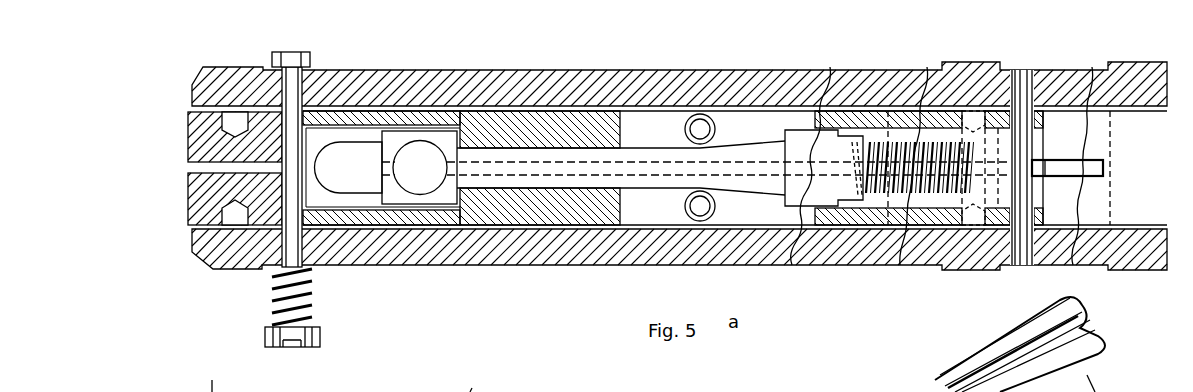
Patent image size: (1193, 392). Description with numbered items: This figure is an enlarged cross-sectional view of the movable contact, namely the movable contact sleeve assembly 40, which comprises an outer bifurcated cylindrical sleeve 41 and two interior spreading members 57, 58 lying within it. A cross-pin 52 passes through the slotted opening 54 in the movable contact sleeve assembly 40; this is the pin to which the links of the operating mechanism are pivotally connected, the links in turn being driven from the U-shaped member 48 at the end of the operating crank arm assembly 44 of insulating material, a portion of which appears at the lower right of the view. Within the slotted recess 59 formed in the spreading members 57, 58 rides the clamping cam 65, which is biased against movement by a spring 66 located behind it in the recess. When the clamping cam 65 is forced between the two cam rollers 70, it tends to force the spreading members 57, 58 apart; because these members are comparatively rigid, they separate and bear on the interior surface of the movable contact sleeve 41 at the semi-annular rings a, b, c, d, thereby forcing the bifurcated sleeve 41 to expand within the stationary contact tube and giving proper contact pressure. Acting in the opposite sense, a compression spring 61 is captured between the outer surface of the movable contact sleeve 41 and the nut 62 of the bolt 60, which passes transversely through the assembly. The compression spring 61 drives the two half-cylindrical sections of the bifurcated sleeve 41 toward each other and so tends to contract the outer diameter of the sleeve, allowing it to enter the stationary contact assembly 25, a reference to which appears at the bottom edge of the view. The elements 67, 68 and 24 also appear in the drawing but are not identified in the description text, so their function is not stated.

The movable contact sleeve assembly 40 is at (603, 267).
The outer bifurcated cylindrical sleeve 41 is at (590, 78).
The cross-pin 52 is at (427, 185).
The slotted opening 54 is at (347, 142).
The spreading member 57 is at (192, 213).
The spreading member 58 is at (192, 143).
The slotted recess 59 is at (613, 148).
The bolt 60 is at (292, 348).
The compression spring 61 is at (273, 300).
The nut 62 is at (322, 339).
The clamping cam 65 is at (771, 147).
The spring 66 is at (888, 145).
The end plate 67 is at (1025, 75).
The stop 68 is at (1056, 147).
The cam roller 70 is at (716, 131).
The operating crank arm assembly 44 is at (1118, 344).
The U-shaped member 48 is at (1112, 384).
The stationary contact assembly 25 is at (485, 385).
The support 24 is at (237, 385).
The semi-annular ring a is at (232, 217).
The semi-annular ring b is at (236, 112).
The semi-annular ring c is at (975, 111).
The semi-annular ring d is at (970, 228).